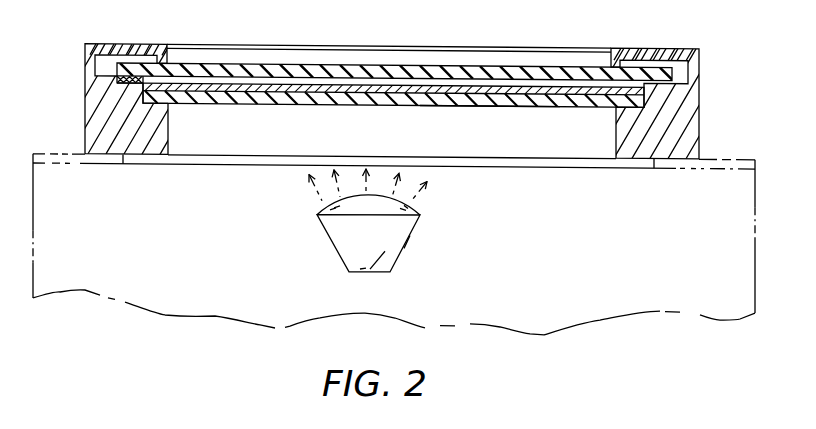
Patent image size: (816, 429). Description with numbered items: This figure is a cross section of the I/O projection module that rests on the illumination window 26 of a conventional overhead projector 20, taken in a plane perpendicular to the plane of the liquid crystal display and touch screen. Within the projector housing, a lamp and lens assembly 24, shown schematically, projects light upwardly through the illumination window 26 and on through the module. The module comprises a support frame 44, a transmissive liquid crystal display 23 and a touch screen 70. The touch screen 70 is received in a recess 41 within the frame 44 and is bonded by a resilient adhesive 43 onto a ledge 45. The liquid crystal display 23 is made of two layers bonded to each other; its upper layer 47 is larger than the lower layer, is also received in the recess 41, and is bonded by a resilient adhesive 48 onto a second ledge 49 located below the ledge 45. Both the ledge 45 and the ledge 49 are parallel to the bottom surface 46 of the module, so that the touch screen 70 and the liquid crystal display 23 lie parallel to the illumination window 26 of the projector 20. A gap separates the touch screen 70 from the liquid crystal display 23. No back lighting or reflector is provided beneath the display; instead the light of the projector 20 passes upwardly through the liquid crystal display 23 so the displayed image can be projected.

The overhead projector 20 is at (757, 194).
The liquid crystal display 23 is at (502, 103).
The lamp and lens assembly 24 is at (412, 229).
The illumination window 26 is at (569, 164).
The recess 41 is at (109, 58).
The resilient adhesive 43 is at (128, 82).
The support frame 44 is at (84, 96).
The ledge 45 is at (135, 69).
The bottom surface 46 is at (673, 164).
The upper layer 47 is at (265, 62).
The resilient adhesive 48 is at (153, 100).
The ledge 49 is at (147, 88).
The touch screen 70 is at (369, 60).